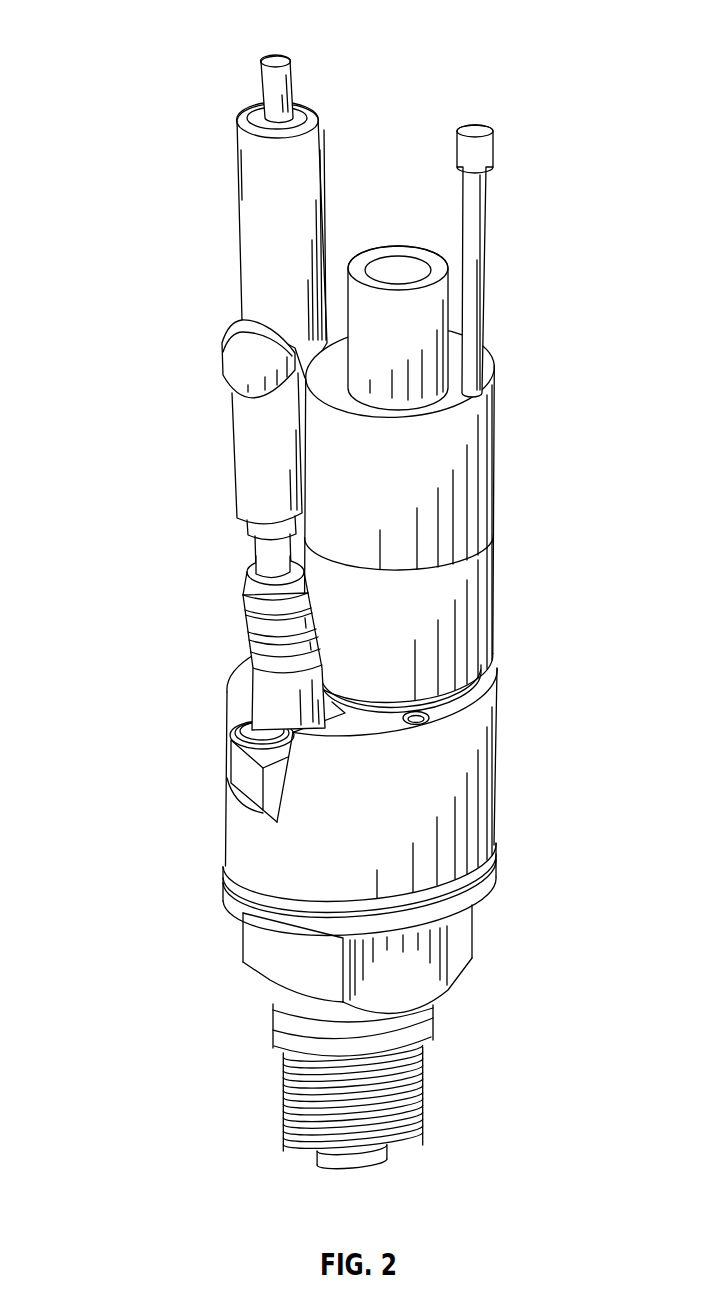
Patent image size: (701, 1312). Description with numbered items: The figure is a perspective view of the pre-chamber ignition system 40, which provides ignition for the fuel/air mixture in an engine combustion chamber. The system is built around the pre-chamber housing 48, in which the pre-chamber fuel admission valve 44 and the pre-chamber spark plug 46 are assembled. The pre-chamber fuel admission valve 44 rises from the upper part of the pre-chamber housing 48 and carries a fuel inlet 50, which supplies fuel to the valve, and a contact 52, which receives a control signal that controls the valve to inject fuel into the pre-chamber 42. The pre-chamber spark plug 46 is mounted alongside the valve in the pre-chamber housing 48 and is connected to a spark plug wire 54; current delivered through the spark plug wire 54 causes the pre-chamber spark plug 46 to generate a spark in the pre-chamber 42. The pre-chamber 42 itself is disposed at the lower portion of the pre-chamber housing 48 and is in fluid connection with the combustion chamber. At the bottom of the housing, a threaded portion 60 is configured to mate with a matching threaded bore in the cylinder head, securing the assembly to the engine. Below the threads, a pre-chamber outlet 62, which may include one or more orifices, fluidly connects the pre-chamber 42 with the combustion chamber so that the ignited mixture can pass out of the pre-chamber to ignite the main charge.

The pre-chamber ignition system 40 is at (118, 40).
The pre-chamber 42 is at (287, 1005).
The pre-chamber fuel admission valve 44 is at (498, 465).
The pre-chamber spark plug 46 is at (243, 617).
The pre-chamber housing 48 is at (498, 747).
The fuel inlet 50 is at (486, 223).
The contact 52 is at (400, 236).
The spark plug wire 54 is at (225, 430).
The threaded portion 60 is at (272, 1098).
The pre-chamber outlet 62 is at (351, 1173).